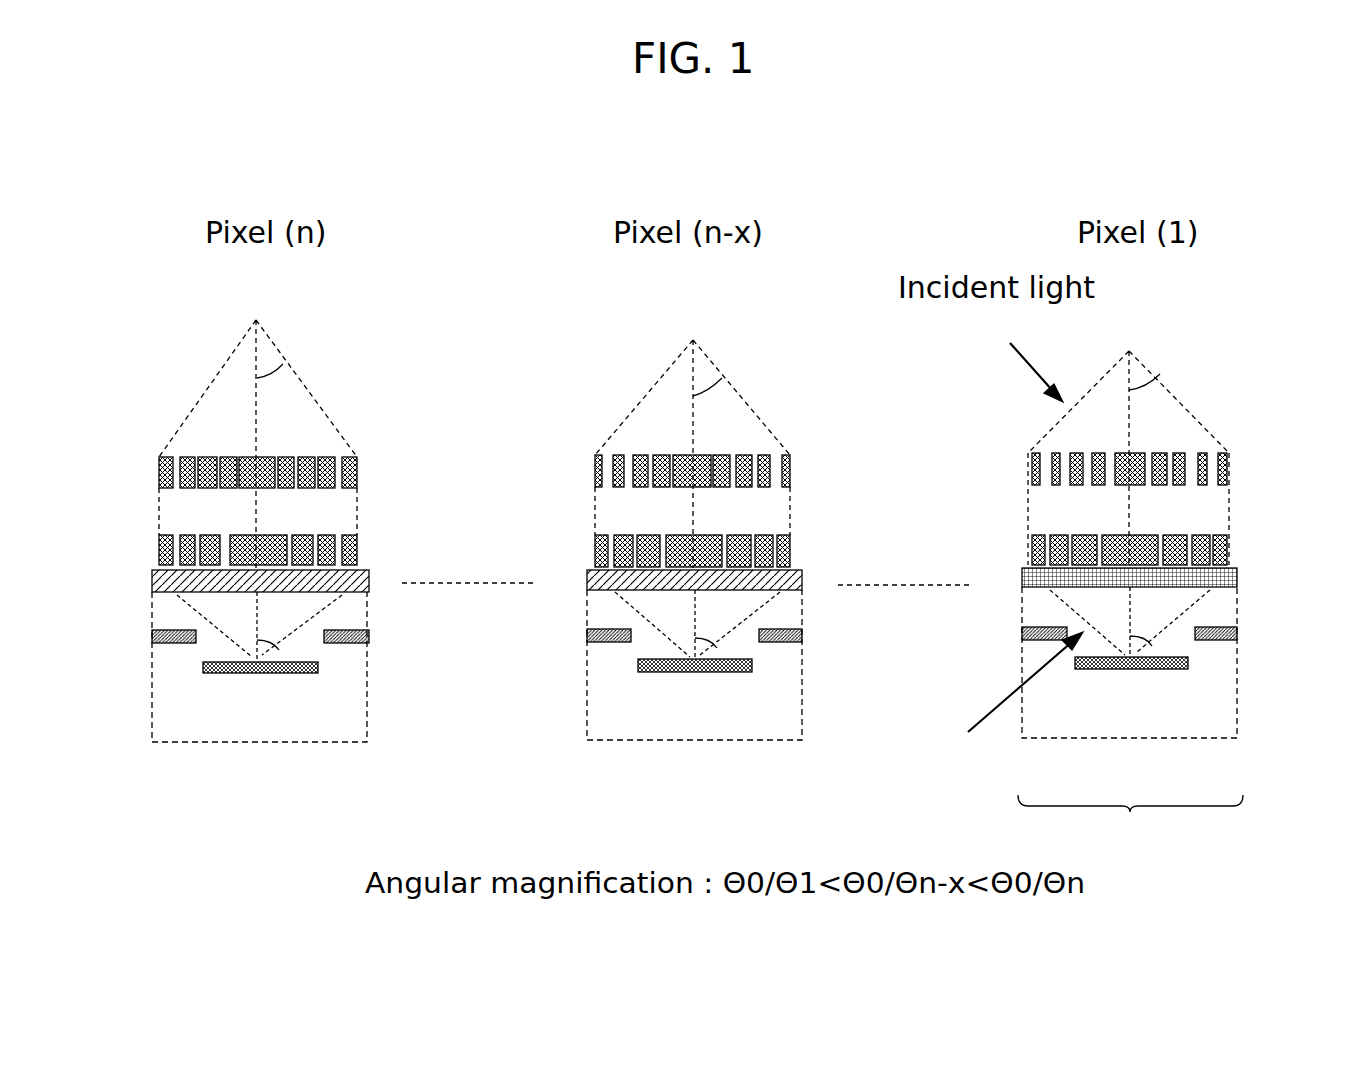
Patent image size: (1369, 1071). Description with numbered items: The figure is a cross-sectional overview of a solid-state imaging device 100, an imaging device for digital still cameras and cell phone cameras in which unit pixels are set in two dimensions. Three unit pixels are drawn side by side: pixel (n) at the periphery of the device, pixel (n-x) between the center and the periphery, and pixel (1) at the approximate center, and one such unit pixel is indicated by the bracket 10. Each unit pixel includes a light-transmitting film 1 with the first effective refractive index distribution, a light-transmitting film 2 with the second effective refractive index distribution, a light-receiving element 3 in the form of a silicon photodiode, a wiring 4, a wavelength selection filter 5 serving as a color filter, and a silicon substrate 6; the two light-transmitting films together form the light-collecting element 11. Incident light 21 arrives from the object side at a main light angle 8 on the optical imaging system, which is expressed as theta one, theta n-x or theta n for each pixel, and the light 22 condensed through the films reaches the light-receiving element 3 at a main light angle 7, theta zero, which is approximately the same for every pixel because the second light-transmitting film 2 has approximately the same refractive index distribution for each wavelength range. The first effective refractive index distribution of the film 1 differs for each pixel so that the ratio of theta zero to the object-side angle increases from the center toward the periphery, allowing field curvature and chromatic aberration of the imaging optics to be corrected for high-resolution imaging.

The solid-state imaging device 100 is at (1141, 160).
The light-transmitting film with the first effective refractive index distribution 1 is at (1205, 463).
The light-transmitting film with the second effective refractive index distribution 2 is at (1205, 543).
The light-receiving element 3 is at (1188, 665).
The wiring 4 is at (1022, 633).
The wavelength selection filter 5 is at (362, 570).
The Si substrate 6 is at (1050, 725).
The main light angle on the light-receiving element 7 is at (288, 665).
The main light angle on the optical imaging system 8 is at (270, 360).
The pixel 10 is at (1130, 822).
The light-collecting element 11 is at (567, 455).
The incident light 21 is at (1020, 351).
The condensed light 22 is at (1005, 698).